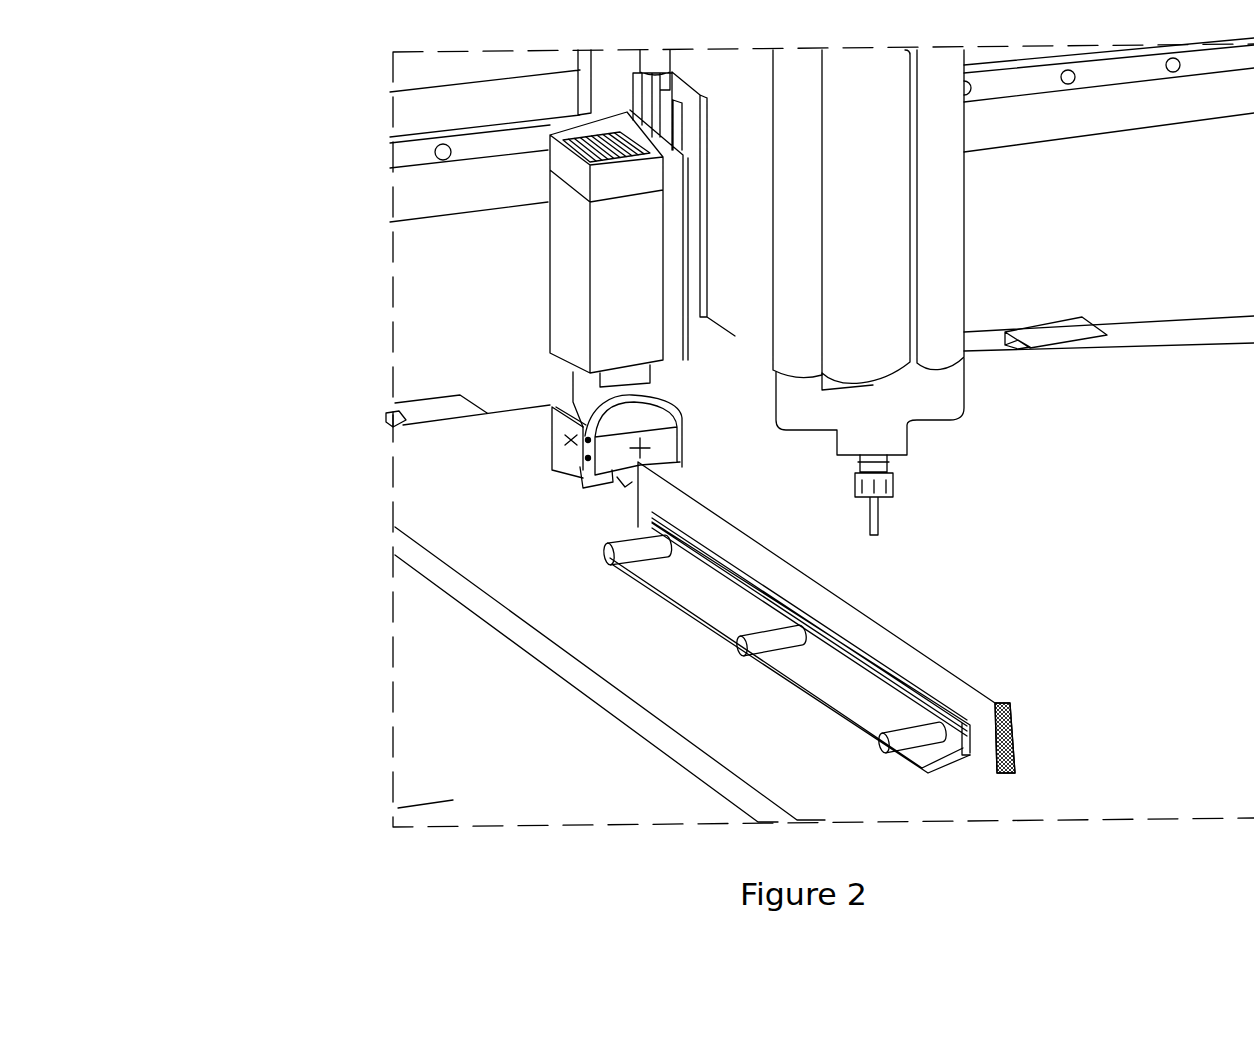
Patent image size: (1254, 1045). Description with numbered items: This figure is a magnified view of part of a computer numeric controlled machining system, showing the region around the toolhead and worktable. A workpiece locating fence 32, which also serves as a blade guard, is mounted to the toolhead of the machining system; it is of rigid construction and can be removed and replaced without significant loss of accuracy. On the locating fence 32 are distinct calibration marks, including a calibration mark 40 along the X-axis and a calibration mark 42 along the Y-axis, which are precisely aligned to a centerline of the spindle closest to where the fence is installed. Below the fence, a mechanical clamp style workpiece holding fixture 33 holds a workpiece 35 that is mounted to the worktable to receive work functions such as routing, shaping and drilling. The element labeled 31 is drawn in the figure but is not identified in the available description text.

The camera 31 is at (552, 300).
The workpiece locating fence 32 is at (548, 419).
The calibration mark 40 is at (555, 443).
The calibration mark 42 is at (628, 458).
The mechanical clamp style workpiece holding fixture 33 is at (730, 624).
The workpiece 35 is at (1013, 703).